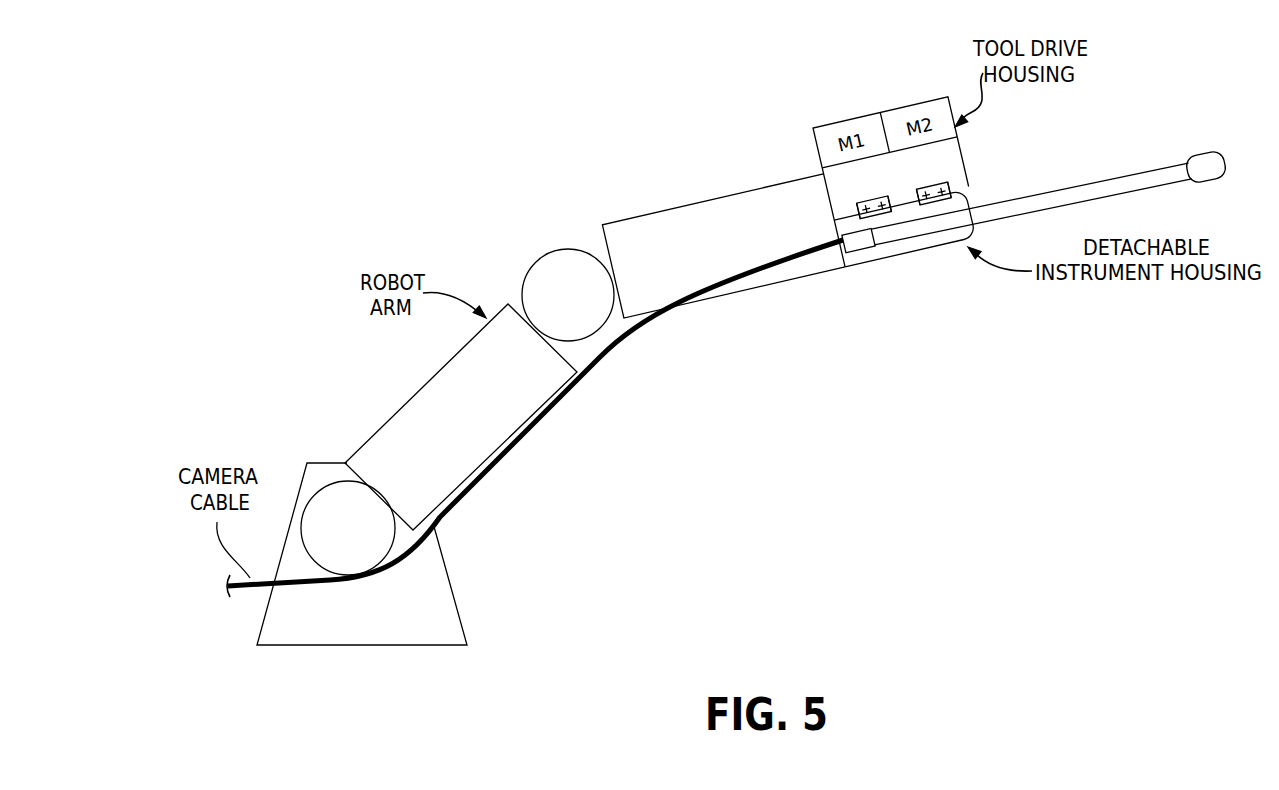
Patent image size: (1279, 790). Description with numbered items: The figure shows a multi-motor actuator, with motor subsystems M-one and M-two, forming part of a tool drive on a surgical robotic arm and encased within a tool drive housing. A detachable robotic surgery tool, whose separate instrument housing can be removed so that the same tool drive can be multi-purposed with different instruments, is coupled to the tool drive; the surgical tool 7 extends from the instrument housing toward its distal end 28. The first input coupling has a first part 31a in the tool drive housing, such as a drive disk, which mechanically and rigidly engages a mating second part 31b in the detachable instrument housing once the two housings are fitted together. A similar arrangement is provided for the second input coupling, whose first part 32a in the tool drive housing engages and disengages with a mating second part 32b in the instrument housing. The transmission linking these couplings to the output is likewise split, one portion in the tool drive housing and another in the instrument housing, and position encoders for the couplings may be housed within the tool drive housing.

The first part of the input coupling 31a is at (862, 201).
The second part of the input coupling 31b is at (857, 218).
The first part of the second input coupling 32a is at (936, 185).
The second part of the second input coupling 32b is at (935, 202).
The surgical tool 7 is at (998, 202).
The instrument tip 28 is at (1200, 152).